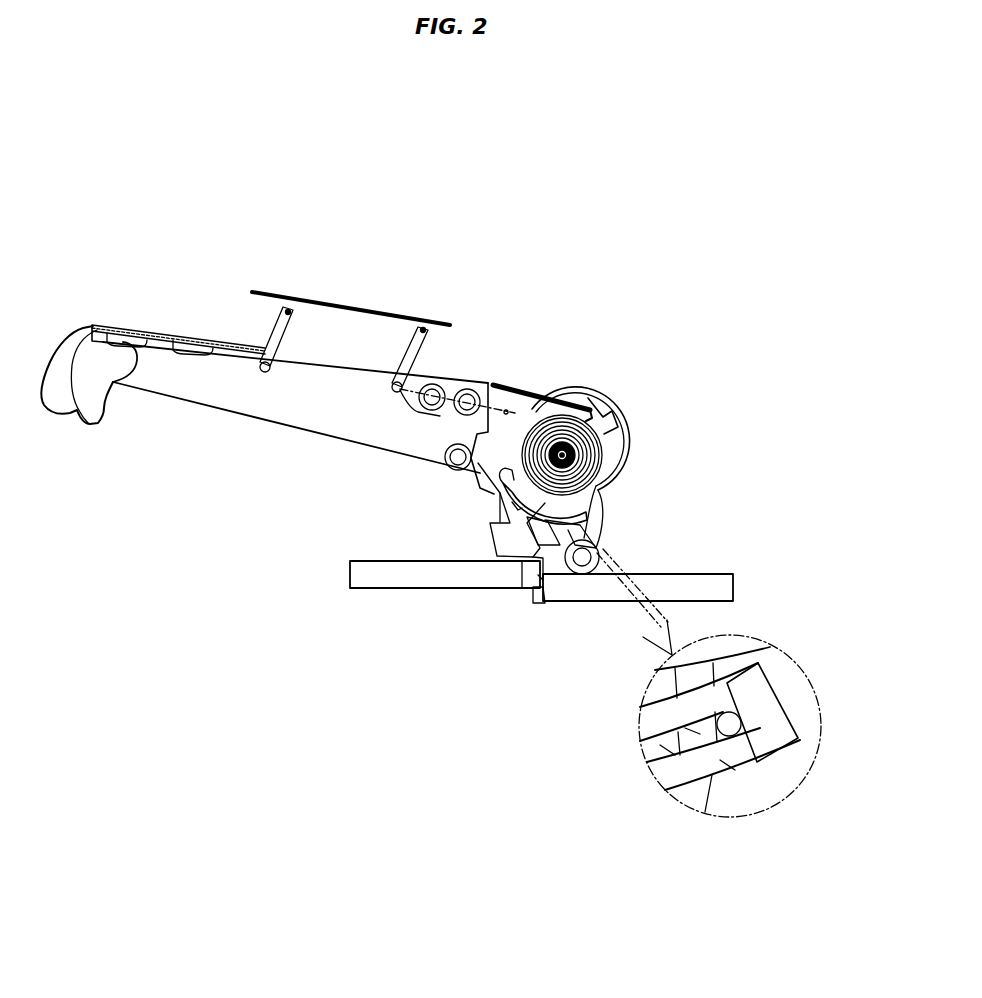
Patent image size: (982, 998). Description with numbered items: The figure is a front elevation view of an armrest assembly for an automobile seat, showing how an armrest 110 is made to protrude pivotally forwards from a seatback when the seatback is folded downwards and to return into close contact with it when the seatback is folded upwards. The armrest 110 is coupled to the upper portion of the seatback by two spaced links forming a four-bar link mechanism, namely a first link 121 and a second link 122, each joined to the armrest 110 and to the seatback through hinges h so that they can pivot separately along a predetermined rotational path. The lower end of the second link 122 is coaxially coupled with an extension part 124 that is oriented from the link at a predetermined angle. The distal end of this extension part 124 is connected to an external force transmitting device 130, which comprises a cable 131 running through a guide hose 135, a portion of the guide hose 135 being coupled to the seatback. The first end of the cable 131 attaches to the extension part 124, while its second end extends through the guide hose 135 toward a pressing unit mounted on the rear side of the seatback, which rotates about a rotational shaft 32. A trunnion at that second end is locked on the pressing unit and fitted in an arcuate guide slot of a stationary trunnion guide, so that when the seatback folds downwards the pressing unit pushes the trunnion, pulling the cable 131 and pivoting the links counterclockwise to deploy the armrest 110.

The rotational shaft 32 is at (578, 452).
The armrest 110 is at (343, 303).
The first link 121 is at (270, 328).
The second link 122 is at (415, 355).
The extension part 124 is at (397, 392).
The external force transmitting device 130 is at (638, 390).
The cable 131 is at (470, 472).
The guide hose 135 is at (588, 382).
The hinges h is at (283, 305).